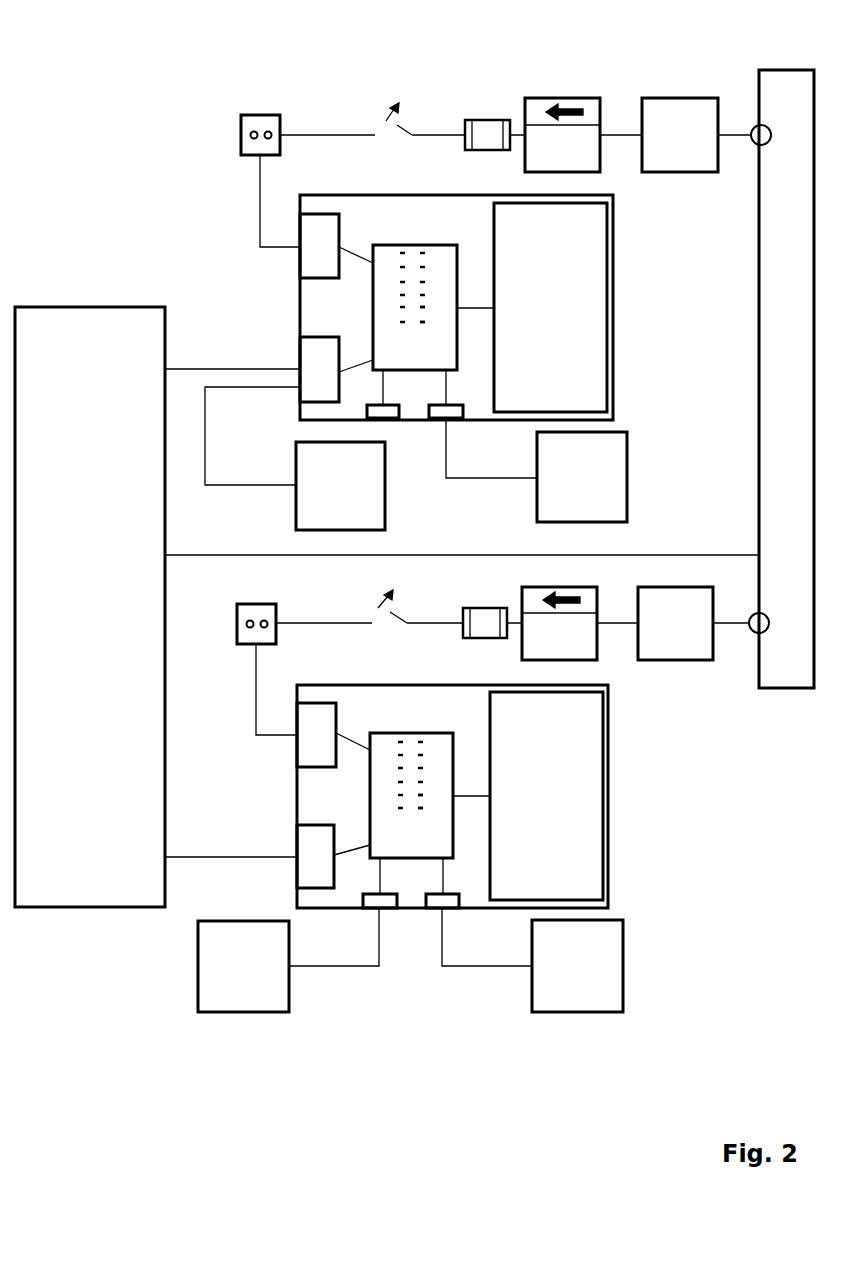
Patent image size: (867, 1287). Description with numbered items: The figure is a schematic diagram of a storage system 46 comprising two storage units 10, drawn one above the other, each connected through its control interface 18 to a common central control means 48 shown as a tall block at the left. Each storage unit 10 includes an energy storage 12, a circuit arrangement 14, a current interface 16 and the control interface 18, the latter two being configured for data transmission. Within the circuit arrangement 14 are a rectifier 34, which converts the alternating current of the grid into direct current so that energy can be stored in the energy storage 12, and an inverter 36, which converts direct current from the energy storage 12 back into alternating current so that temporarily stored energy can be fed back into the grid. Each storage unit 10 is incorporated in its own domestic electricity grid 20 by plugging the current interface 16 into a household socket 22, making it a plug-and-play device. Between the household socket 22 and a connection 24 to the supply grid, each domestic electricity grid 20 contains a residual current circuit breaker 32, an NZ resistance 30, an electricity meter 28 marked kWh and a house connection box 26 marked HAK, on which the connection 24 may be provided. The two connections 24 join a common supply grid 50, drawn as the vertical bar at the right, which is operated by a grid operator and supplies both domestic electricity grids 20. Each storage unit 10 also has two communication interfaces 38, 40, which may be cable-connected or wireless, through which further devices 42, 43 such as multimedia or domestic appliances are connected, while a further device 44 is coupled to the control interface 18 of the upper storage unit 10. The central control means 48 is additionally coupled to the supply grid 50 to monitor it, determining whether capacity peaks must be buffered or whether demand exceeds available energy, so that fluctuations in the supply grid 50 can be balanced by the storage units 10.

The storage unit 10 is at (645, 212).
The energy storage 12 is at (580, 338).
The circuit arrangement 14 is at (457, 333).
The current interface 16 is at (340, 216).
The control interface 18 is at (300, 322).
The domestic electricity grid 20 is at (328, 86).
The household socket 22 is at (262, 114).
The connection 24 is at (752, 127).
The house connection box 26 is at (655, 97).
The electricity meter 28 is at (558, 97).
The NZ resistance 30 is at (488, 119).
The residual current circuit breaker 32 is at (400, 122).
The rectifier 34 is at (420, 258).
The inverter 36 is at (430, 308).
The communication interface 38 is at (383, 418).
The communication interface 40 is at (450, 418).
The further device 42 is at (250, 1012).
The further device 43 is at (620, 500).
The further device 44 is at (372, 515).
The storage system 46 is at (105, 88).
The central control means 48 is at (57, 325).
The supply grid 50 is at (773, 688).